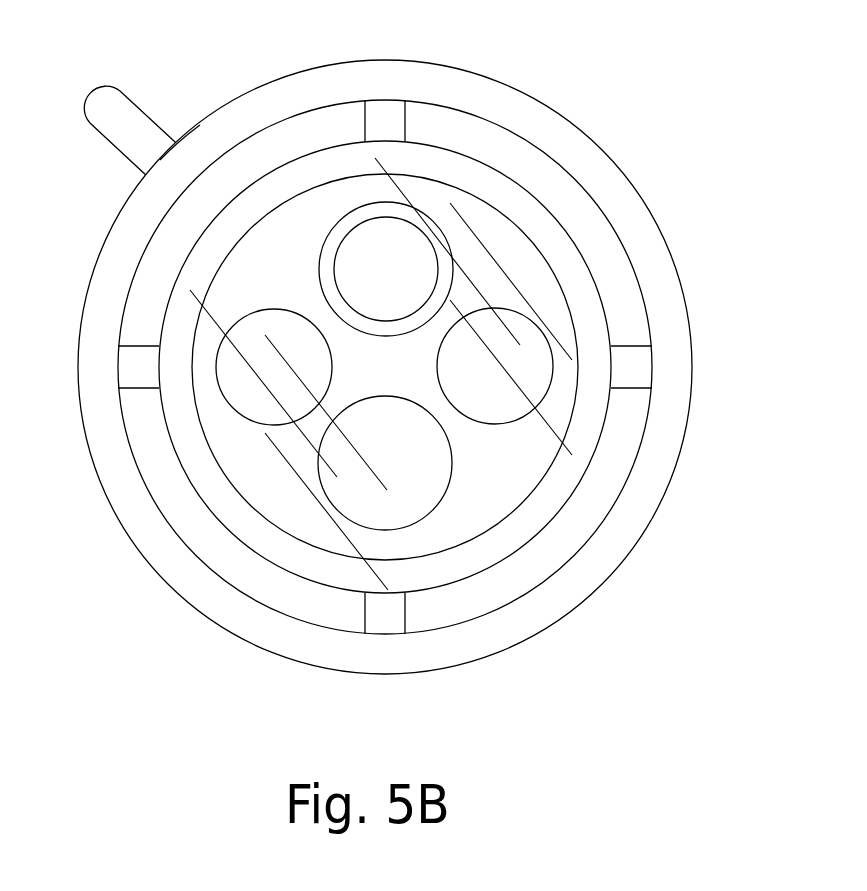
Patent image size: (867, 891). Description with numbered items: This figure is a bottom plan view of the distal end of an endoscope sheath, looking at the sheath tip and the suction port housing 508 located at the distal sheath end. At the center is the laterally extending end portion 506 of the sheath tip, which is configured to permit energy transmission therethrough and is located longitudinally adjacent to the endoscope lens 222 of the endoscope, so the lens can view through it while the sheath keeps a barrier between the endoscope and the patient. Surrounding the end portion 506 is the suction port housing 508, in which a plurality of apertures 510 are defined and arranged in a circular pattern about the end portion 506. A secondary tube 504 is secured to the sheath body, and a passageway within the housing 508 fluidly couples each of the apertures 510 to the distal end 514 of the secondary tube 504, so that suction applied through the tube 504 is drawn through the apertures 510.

The endoscope lens 222 is at (355, 265).
The secondary tube 504 is at (100, 93).
The laterally extending end portion 506 is at (450, 568).
The suction port housing 508 is at (687, 300).
The apertures 510 is at (138, 313).
The distal end of the secondary tube 514 is at (180, 137).